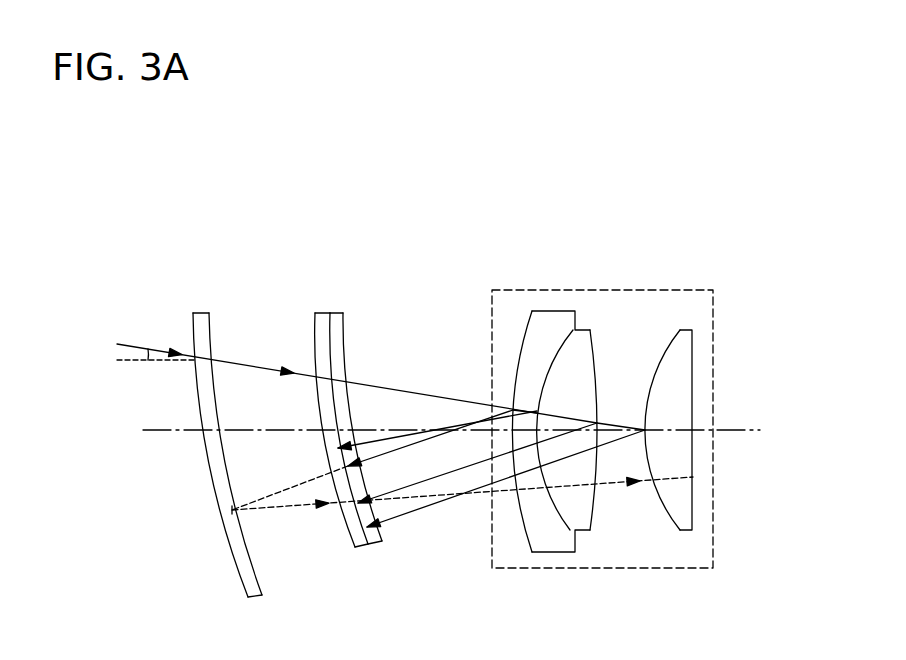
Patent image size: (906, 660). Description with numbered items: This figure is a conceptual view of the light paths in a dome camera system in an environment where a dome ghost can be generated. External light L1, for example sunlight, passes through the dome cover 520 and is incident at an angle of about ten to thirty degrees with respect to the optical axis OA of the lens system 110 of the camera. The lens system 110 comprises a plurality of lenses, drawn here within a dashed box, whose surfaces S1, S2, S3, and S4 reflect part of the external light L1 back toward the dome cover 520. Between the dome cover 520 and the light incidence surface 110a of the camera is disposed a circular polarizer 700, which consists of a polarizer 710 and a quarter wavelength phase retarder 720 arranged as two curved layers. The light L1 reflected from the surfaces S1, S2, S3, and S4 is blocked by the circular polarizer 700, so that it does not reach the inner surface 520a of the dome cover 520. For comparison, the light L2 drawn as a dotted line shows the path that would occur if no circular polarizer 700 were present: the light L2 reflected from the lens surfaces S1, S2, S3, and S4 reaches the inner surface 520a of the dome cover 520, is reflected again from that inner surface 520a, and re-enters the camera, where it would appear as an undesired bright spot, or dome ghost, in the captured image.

The dome cover 520 is at (202, 313).
The inner surface of the dome cover 520a is at (257, 576).
The circular polarizer 700 is at (340, 374).
The polarizer 710 is at (319, 315).
The ¼ wavelength phase retarder 720 is at (356, 397).
The lens system 110 is at (557, 438).
The light incidence surface 110a is at (513, 455).
The first lens surface S1 is at (522, 540).
The second lens surface S2 is at (558, 520).
The third lens surface S3 is at (597, 520).
The fourth lens surface S4 is at (673, 520).
The external light L1 is at (244, 367).
The light path without circular polarizer L2 is at (292, 508).
The optical axis OA is at (172, 433).